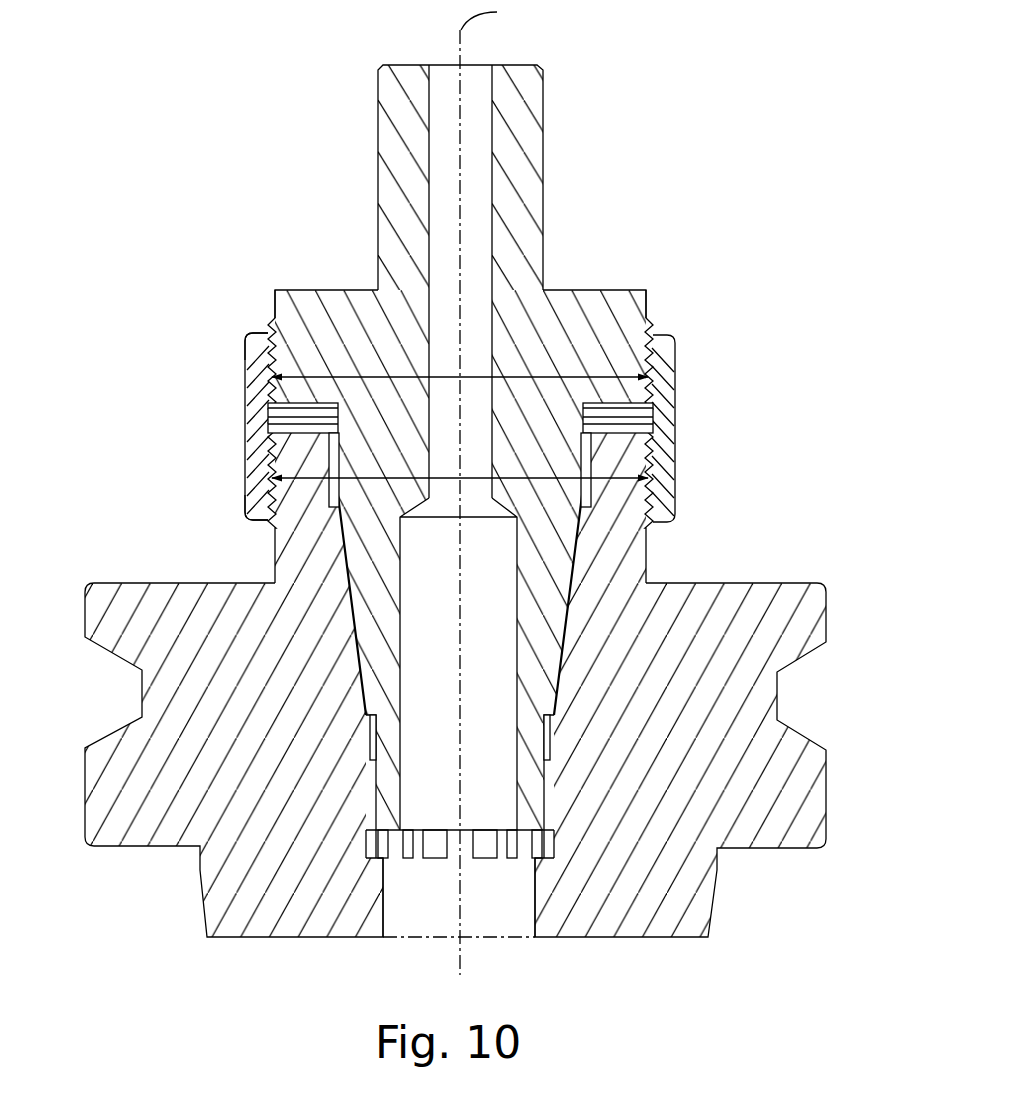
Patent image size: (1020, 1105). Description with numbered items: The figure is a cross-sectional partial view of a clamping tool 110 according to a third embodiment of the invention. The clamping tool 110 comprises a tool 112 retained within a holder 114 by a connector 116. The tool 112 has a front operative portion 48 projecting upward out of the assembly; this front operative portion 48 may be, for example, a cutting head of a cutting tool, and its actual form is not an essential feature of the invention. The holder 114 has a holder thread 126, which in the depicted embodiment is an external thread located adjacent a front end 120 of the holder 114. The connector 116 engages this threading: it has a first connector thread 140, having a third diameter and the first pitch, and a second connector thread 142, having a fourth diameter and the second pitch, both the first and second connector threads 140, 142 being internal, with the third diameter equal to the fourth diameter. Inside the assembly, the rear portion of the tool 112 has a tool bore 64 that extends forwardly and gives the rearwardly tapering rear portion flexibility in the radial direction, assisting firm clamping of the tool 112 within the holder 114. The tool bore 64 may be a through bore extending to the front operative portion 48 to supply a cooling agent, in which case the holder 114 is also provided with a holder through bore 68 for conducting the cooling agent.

The clamping tool 110 is at (455, 493).
The front operative portion 48 is at (350, 100).
The tool 112 is at (568, 320).
The holder 114 is at (727, 620).
The connector 116 is at (668, 397).
The front end 120 is at (292, 424).
The holder thread 126 is at (650, 455).
The first connector thread 140 is at (285, 508).
The second connector thread 142 is at (288, 352).
The tool bore 64 is at (480, 808).
The holder through bore 68 is at (397, 913).